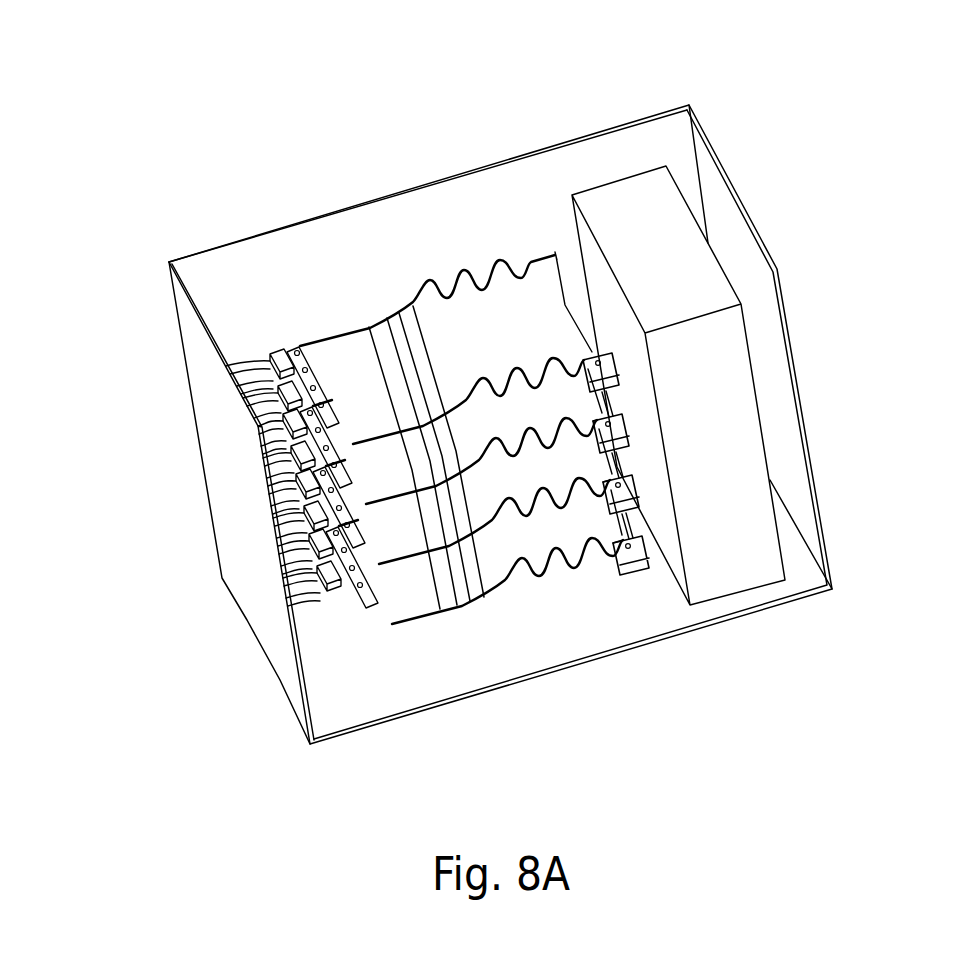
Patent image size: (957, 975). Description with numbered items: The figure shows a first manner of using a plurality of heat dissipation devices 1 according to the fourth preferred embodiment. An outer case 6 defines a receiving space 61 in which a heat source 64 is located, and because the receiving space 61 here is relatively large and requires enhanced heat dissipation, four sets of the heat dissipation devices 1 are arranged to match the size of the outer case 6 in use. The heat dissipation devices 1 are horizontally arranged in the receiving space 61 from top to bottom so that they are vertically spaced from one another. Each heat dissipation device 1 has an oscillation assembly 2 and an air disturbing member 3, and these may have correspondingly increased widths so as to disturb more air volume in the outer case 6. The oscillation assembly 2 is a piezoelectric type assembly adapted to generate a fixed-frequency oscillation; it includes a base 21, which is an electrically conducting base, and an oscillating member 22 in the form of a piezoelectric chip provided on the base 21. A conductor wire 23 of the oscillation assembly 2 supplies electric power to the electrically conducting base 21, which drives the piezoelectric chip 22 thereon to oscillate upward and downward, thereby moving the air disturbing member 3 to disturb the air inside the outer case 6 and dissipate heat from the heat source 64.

The heat dissipation device 1 is at (373, 370).
The oscillation assembly 2 is at (238, 362).
The base 21 is at (283, 357).
The oscillating member 22 is at (340, 400).
The conductor wire 23 is at (240, 373).
The air disturbing member 3 is at (480, 290).
The outer case 6 is at (575, 177).
The receiving space 61 is at (415, 253).
The heat source 64 is at (730, 395).